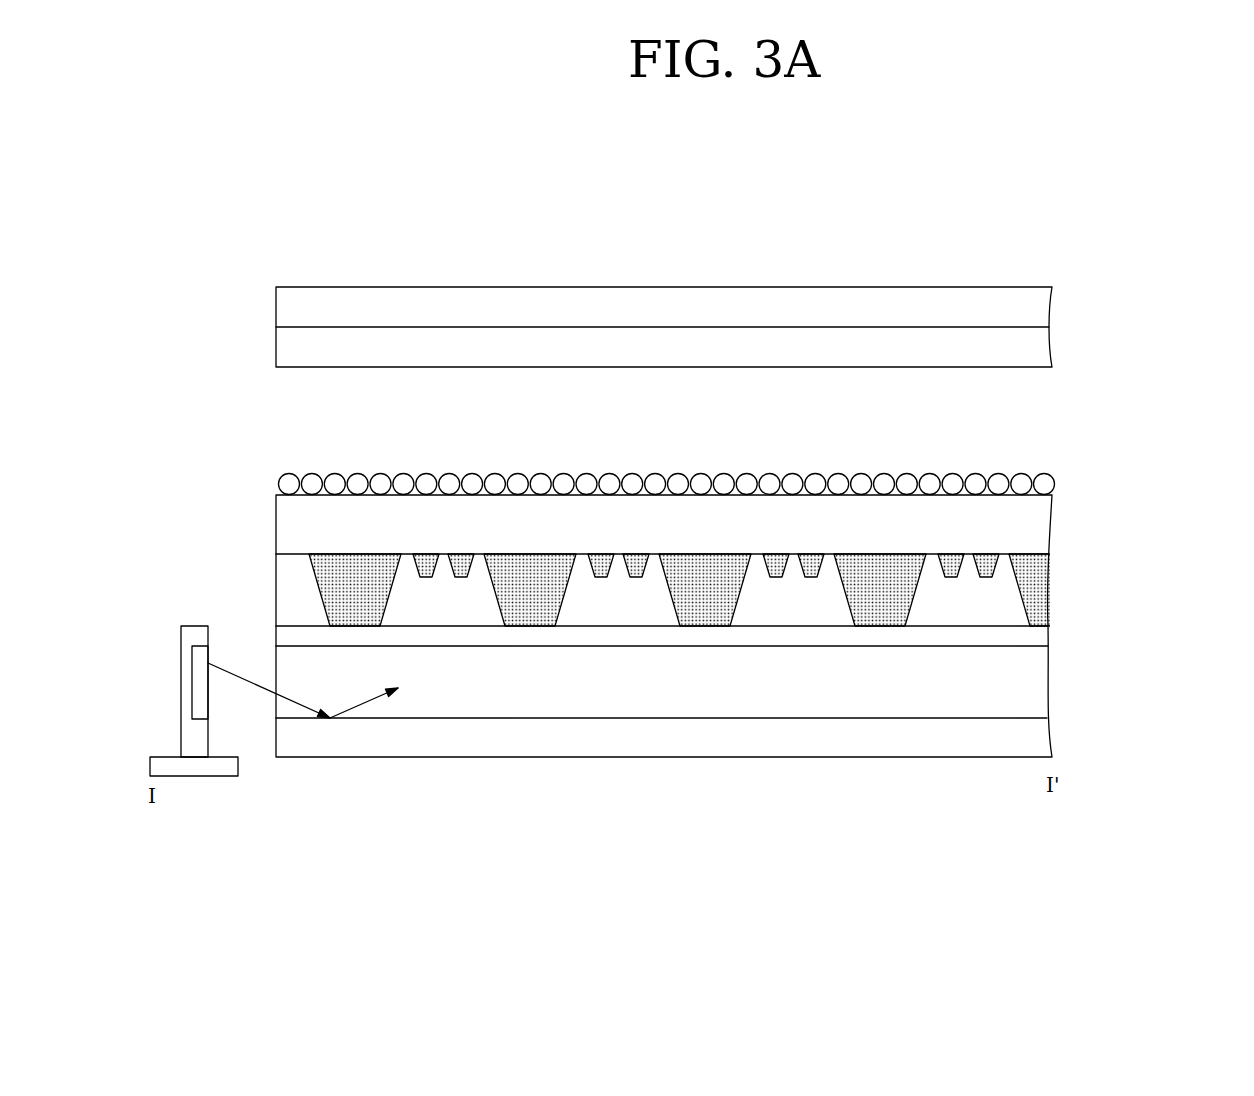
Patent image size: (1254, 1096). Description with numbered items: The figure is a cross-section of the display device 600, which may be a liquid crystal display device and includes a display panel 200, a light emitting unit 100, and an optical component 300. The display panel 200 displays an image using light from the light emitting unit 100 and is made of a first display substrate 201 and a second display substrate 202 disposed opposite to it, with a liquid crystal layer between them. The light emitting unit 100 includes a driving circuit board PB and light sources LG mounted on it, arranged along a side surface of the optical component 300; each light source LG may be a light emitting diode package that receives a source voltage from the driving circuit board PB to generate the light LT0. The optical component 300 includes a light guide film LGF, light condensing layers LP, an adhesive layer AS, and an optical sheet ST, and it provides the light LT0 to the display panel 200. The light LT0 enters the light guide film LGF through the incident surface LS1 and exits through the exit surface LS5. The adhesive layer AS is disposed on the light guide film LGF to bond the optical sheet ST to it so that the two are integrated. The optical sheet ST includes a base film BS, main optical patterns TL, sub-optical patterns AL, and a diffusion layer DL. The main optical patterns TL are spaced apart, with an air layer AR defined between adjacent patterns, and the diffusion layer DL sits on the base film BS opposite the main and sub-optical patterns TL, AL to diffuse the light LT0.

The display device 600 is at (1036, 213).
The display panel 200 is at (736, 327).
The first display substrate 201 is at (1040, 347).
The second display substrate 202 is at (1040, 305).
The optical component 300 is at (723, 650).
The optical sheet ST is at (723, 513).
The diffusion layer DL is at (1054, 484).
The base film BS is at (1040, 524).
The main optical patterns TL is at (704, 613).
The sub-optical patterns AL is at (811, 570).
The air layer AR is at (779, 606).
The adhesive layer AS is at (1045, 636).
The light guide film LGF is at (1040, 683).
The light condensing layers LP is at (1040, 737).
The exit surface LS5 is at (632, 646).
The incident surface LS1 is at (276, 705).
The light LT0 is at (368, 705).
The light emitting unit 100 is at (170, 757).
The light sources LG is at (181, 705).
The driving circuit board PB is at (190, 767).